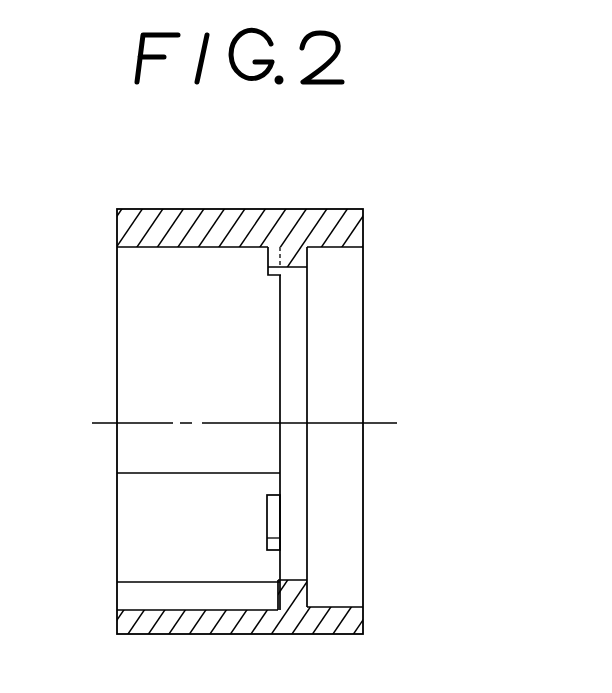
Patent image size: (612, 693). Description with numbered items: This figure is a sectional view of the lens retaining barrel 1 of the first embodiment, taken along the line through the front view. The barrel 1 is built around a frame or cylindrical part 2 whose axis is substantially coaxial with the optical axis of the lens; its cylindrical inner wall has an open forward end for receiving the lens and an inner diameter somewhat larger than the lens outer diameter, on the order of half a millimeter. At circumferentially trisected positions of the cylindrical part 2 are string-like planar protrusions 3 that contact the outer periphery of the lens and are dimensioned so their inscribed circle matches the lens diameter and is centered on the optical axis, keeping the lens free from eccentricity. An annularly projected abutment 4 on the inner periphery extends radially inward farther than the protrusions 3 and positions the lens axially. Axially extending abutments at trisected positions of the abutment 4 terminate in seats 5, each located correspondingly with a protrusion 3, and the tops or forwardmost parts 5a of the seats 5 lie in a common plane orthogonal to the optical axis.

The lens retaining barrel 1 is at (262, 192).
The cylindrical part 2 is at (133, 223).
The protrusions 3 is at (147, 533).
The abutment 4 is at (297, 250).
The seats 5 is at (277, 275).
The forwardmost parts 5a is at (268, 258).